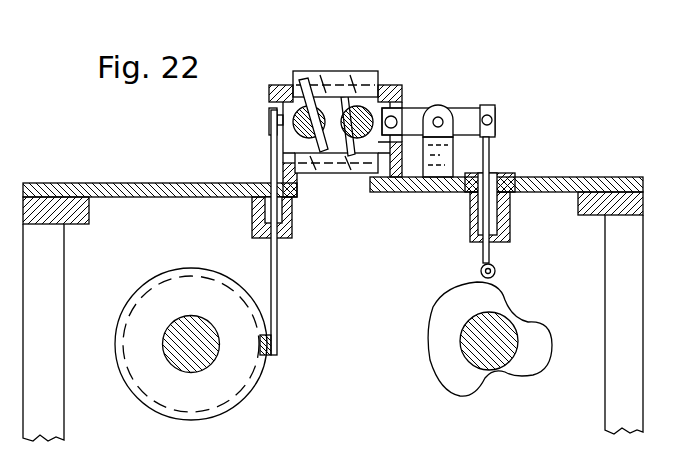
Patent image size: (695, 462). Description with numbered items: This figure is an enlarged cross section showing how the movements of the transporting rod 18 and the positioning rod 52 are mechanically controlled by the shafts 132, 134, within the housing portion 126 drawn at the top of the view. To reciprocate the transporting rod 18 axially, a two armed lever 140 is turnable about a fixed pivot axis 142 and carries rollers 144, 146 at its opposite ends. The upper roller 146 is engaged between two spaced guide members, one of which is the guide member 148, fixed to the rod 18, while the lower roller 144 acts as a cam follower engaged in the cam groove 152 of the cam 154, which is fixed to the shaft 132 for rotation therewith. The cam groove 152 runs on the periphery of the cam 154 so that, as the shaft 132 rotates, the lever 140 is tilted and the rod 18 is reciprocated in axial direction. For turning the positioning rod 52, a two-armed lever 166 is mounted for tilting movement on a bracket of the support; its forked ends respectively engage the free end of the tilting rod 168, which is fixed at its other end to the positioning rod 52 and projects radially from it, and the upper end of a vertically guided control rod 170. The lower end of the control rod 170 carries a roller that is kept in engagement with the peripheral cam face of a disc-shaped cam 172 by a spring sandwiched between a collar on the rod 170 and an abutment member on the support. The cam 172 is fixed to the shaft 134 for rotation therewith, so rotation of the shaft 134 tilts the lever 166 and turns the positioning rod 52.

The transporting rod 18 is at (301, 83).
The positioning rod 52 is at (357, 108).
The cover block 126 is at (326, 66).
The shaft 132 is at (174, 361).
The shaft 134 is at (499, 344).
The two armed lever 140 is at (278, 268).
The fixed pivot axis 142 is at (293, 226).
The roller 144 is at (268, 358).
The roller 146 is at (280, 125).
The guide member 148 is at (290, 100).
The cam groove 152 is at (203, 276).
The cam 154 is at (222, 381).
The two-armed lever 166 is at (420, 117).
The tilting rod 168 is at (380, 98).
The control rod 170 is at (492, 250).
The disc-shaped cam 172 is at (535, 326).